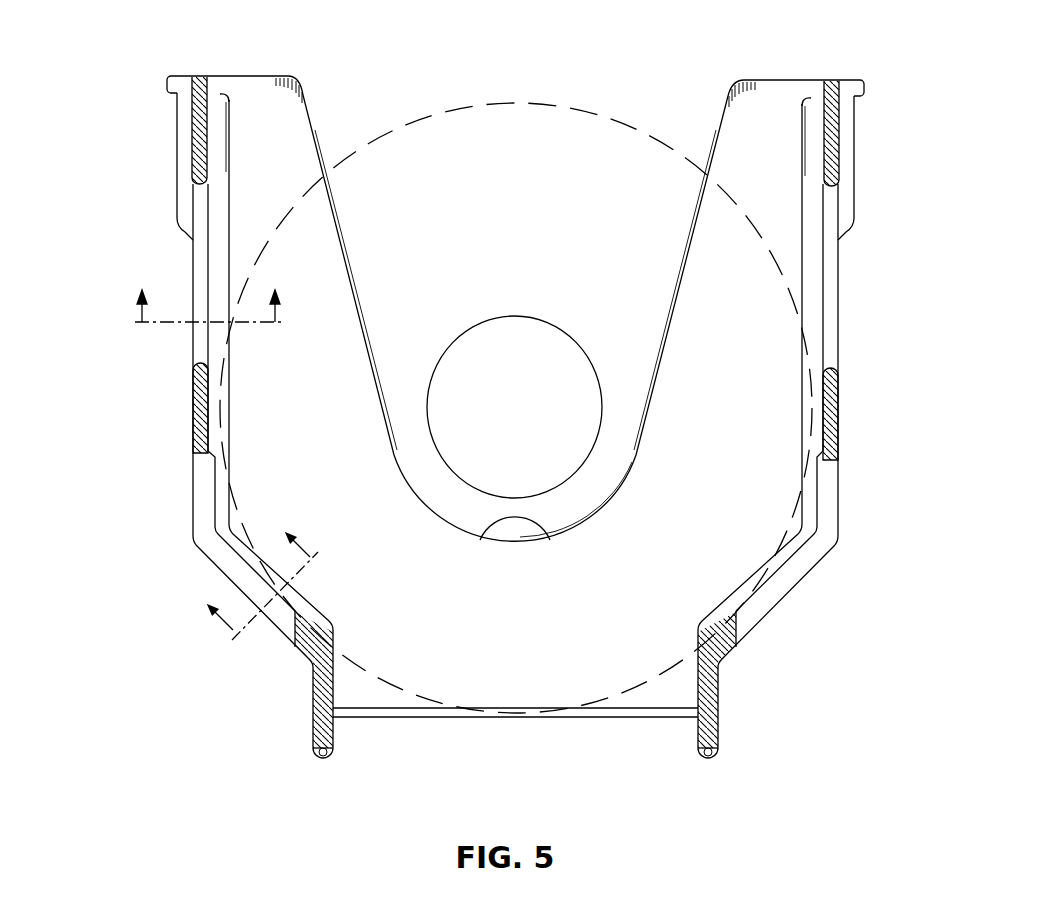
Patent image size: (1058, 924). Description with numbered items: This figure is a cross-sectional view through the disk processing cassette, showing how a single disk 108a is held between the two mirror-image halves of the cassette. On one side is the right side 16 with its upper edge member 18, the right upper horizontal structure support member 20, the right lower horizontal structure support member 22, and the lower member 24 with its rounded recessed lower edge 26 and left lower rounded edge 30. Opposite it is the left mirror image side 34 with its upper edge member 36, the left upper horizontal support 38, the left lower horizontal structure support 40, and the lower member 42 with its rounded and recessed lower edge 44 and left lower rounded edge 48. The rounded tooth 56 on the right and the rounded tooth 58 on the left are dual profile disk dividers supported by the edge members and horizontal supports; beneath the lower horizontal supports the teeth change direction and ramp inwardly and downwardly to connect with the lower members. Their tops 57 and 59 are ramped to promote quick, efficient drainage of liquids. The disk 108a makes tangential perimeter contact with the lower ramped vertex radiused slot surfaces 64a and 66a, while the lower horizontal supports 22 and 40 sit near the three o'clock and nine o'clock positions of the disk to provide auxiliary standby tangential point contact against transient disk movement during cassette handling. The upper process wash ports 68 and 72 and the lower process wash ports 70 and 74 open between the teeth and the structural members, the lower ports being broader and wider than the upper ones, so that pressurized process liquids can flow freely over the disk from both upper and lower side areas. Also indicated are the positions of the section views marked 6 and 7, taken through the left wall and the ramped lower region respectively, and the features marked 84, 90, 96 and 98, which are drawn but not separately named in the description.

The right side 16 is at (142, 592).
The upper edge member 18 is at (172, 80).
The right upper horizontal structure support member 20 is at (197, 147).
The right lower horizontal structure support member 22 is at (200, 418).
The lower member 24 is at (318, 705).
The rounded recessed lower edge 26 is at (312, 755).
The left lower rounded edge 30 is at (327, 757).
The left mirror image side 34 is at (893, 596).
The upper edge member 36 is at (867, 88).
The left upper horizontal support 38 is at (838, 147).
The left lower horizontal structure support 40 is at (833, 420).
The lower member 42 is at (718, 697).
The rounded and recessed lower edge 44 is at (713, 758).
The left lower rounded edge 48 is at (702, 756).
The rounded tooth 56 is at (225, 152).
The tooth top 57 is at (220, 90).
The rounded tooth 58 is at (800, 142).
The tooth top 59 is at (815, 92).
The lower ramped vertex radiused slot surface 64a is at (327, 645).
The lower ramped vertex radiused slot surface 66a is at (695, 638).
The upper process wash port 68 is at (212, 261).
The lower process wash port 70 is at (222, 541).
The upper process wash port 72 is at (820, 256).
The lower process wash port 74 is at (814, 538).
The drain groove 84 is at (545, 543).
The connecting web 90 is at (430, 713).
The outer lip 96 is at (183, 195).
The outer lip 98 is at (852, 168).
The disk 108a is at (553, 216).
The section line 6- 6 is at (210, 293).
The section line 7- 7 is at (250, 569).